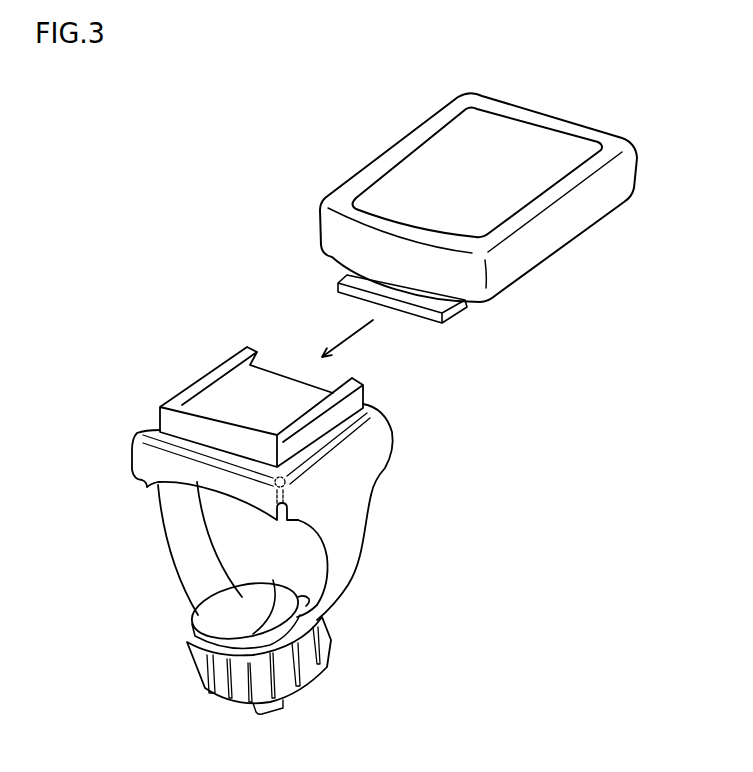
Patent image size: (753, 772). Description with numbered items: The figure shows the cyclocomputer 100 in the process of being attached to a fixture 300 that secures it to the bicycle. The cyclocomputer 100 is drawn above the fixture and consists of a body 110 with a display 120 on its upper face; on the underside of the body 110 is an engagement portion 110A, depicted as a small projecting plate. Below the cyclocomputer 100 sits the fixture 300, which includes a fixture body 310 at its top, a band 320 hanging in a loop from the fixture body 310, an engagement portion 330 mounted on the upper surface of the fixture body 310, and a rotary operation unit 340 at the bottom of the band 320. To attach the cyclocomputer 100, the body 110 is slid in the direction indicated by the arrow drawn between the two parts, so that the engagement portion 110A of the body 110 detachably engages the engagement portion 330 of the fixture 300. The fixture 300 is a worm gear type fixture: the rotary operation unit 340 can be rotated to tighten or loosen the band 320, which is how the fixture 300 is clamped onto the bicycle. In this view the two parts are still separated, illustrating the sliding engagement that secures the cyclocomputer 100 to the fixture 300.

The cyclocomputer 100 is at (402, 113).
The body 110 is at (623, 172).
The engagement portion of body 110A is at (437, 303).
The display 120 is at (547, 143).
The fixture 300 is at (118, 521).
The fixture body 310 is at (355, 430).
The band 320 is at (350, 555).
The engagement portion 330 is at (212, 373).
The rotary operation unit 340 is at (290, 673).